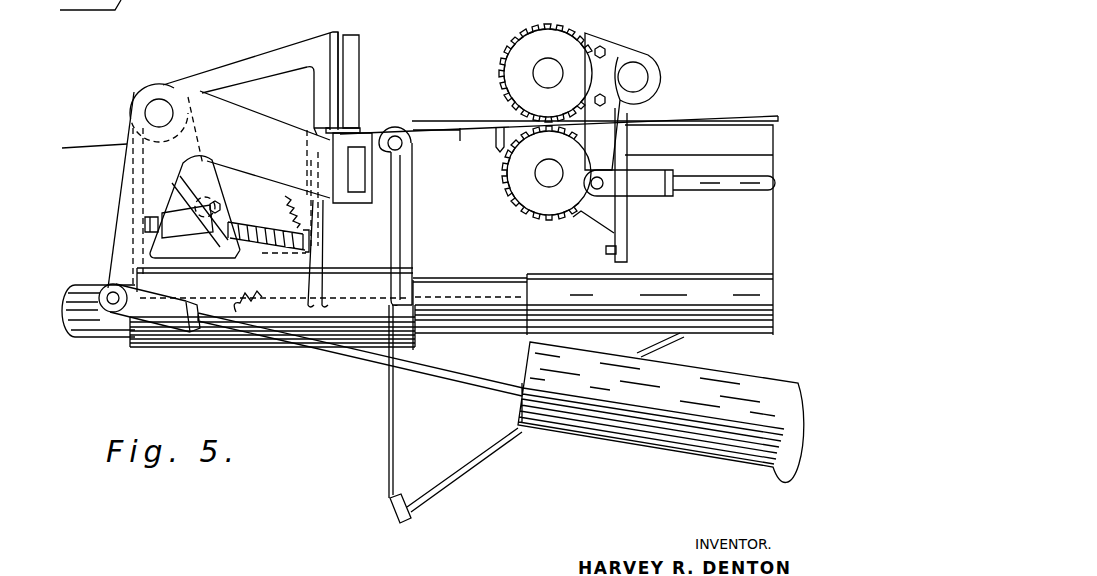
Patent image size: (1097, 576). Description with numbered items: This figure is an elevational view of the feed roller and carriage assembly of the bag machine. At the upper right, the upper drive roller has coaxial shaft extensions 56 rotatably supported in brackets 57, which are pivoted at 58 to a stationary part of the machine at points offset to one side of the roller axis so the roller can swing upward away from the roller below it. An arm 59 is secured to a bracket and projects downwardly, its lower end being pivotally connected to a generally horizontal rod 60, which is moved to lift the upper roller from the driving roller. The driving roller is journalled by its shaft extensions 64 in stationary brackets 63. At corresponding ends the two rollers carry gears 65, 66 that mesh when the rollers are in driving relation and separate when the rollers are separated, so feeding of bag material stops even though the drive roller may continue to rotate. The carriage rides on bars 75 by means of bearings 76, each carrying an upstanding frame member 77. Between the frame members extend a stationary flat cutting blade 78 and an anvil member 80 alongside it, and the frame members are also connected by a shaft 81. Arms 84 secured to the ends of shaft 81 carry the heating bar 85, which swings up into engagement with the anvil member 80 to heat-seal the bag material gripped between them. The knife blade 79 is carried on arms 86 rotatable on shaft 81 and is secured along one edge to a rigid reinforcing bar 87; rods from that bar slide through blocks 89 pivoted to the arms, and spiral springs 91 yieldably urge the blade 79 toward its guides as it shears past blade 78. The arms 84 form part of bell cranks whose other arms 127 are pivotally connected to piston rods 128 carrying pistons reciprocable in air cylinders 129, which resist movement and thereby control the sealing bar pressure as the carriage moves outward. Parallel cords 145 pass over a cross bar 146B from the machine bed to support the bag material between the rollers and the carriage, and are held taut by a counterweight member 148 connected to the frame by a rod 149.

The coaxial shaft extensions 56 is at (552, 70).
The brackets 57 is at (576, 75).
The pivot 58 is at (637, 79).
The arm 59 is at (606, 128).
The rod 60 is at (701, 178).
The stationary brackets 63 is at (597, 214).
The shaft extensions 64 is at (548, 176).
The gear 65 is at (512, 34).
The gear 66 is at (498, 178).
The bars 75 is at (102, 339).
The bearings 76 is at (171, 343).
The frame member 77 is at (272, 54).
The cutting blade 78 is at (339, 101).
The knife blade 79 is at (320, 230).
The anvil member 80 is at (354, 62).
The shaft 81 is at (157, 113).
The arm 84 is at (250, 119).
The heating bar 85 is at (359, 171).
The arms 86 is at (177, 187).
The reinforcing bar 87 is at (290, 207).
The block 89 is at (187, 229).
The spiral spring 91 is at (292, 259).
The bell crank arms 127 is at (118, 236).
The piston rods 128 is at (376, 367).
The cylinders 129 is at (689, 441).
The cords 145 is at (495, 135).
The cable 146B is at (399, 136).
The counterweight member 148 is at (403, 510).
The rod 149 is at (511, 432).